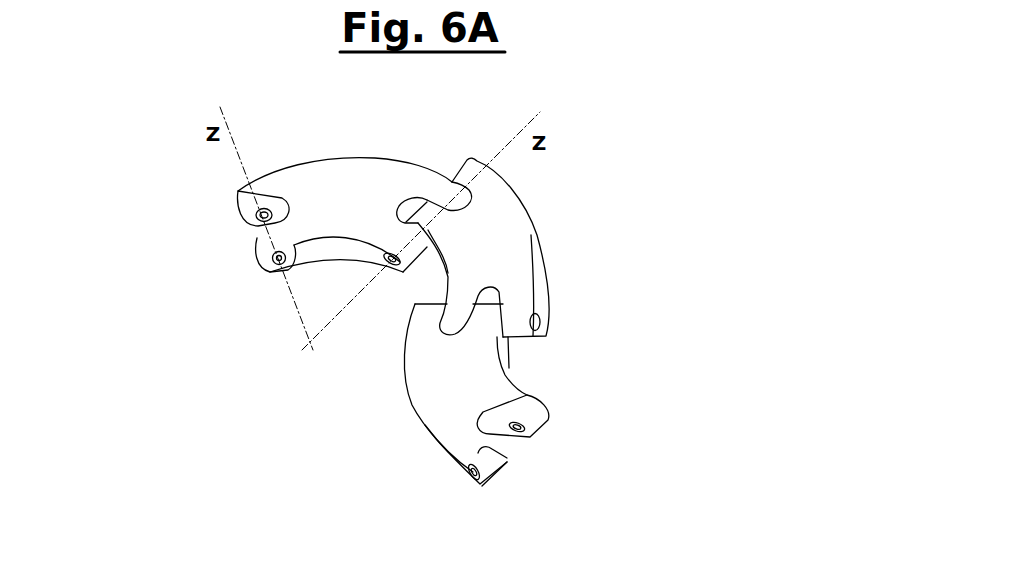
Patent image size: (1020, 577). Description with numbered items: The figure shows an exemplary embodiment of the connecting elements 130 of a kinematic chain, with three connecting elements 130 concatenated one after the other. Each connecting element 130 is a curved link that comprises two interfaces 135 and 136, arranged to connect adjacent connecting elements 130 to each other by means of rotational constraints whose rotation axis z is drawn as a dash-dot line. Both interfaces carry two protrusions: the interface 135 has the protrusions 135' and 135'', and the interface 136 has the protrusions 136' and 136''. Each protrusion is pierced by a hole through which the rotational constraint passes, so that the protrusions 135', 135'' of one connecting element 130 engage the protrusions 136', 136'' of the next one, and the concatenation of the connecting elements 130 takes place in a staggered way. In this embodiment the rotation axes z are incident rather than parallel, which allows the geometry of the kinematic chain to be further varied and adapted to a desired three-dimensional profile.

The connecting element 130 is at (318, 146).
The interface 135 is at (531, 389).
The protrusion of interface 135 135' is at (565, 392).
The protrusion of interface 135 135'' is at (542, 487).
The interface 136 is at (185, 238).
The protrusion of interface 136 136' is at (198, 199).
The protrusion of interface 136 136'' is at (213, 270).